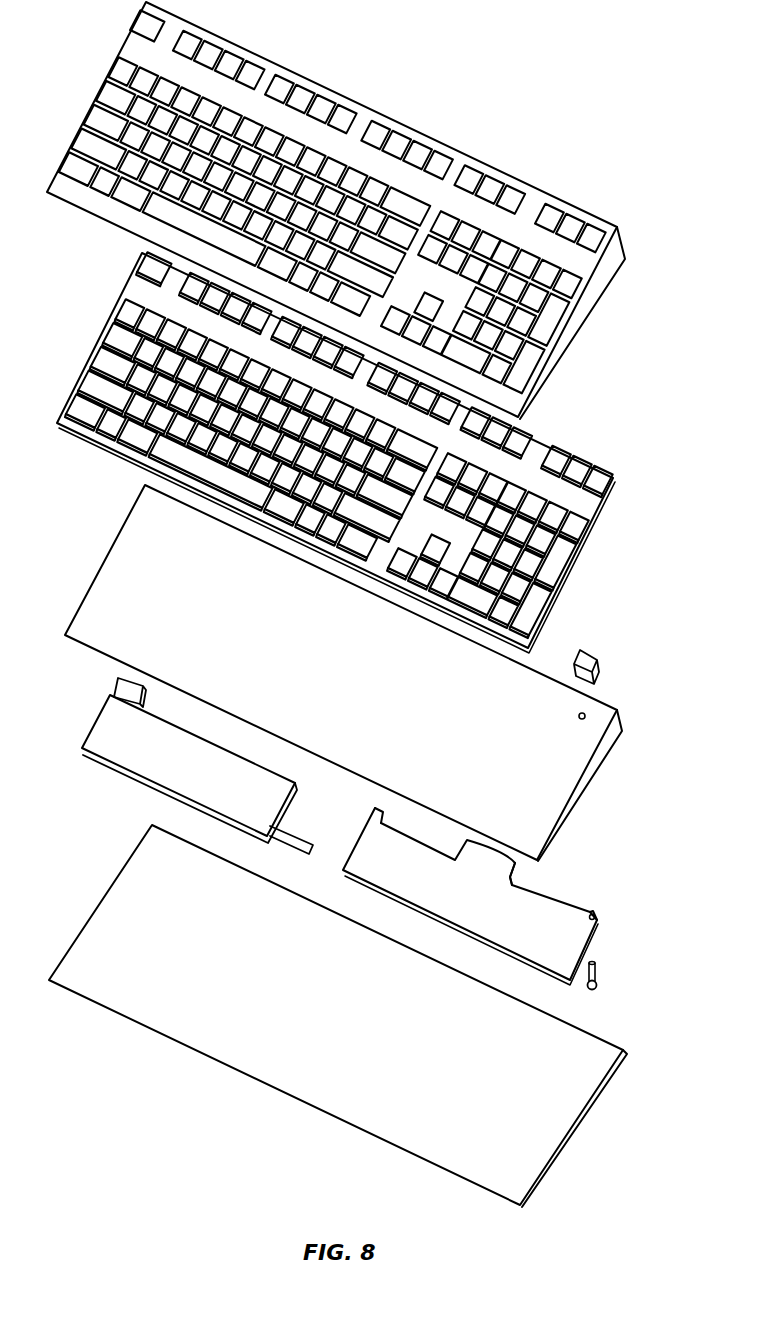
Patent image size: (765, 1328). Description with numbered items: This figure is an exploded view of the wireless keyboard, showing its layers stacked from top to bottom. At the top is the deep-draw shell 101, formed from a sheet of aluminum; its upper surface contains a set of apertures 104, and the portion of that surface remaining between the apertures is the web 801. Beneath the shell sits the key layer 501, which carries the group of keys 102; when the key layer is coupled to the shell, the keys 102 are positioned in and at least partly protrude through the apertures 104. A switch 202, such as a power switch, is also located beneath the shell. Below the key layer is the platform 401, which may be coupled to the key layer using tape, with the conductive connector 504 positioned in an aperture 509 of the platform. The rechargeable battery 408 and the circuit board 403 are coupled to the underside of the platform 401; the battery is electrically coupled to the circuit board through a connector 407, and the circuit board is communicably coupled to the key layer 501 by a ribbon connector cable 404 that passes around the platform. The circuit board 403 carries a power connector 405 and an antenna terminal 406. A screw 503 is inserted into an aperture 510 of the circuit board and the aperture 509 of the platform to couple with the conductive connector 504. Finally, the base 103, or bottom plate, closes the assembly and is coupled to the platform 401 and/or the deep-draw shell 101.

The deep-draw shell 101 is at (596, 214).
The web 801 is at (582, 280).
The apertures 104 is at (148, 21).
The keys 102 is at (145, 262).
The key layer 501 is at (607, 510).
The conductive connector 504 is at (598, 670).
The aperture 509 is at (586, 719).
The platform 401 is at (583, 795).
The switch 202 is at (140, 703).
The rechargeable battery 408 is at (132, 765).
The connector 407 is at (292, 838).
The circuit board 403 is at (576, 942).
The power connector 405 is at (384, 820).
The ribbon connector cable 404 is at (517, 877).
The antenna terminal 406 is at (594, 915).
The aperture 510 is at (598, 921).
The screw 503 is at (600, 982).
The base 103 is at (594, 1083).